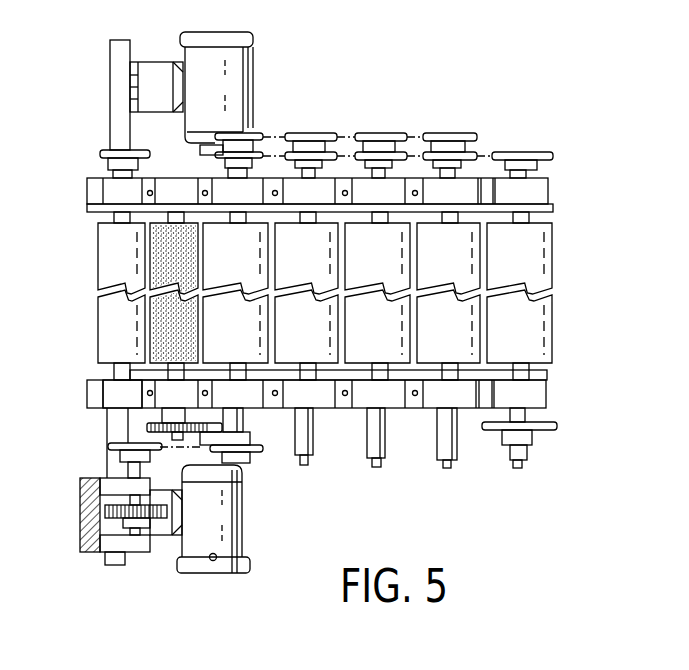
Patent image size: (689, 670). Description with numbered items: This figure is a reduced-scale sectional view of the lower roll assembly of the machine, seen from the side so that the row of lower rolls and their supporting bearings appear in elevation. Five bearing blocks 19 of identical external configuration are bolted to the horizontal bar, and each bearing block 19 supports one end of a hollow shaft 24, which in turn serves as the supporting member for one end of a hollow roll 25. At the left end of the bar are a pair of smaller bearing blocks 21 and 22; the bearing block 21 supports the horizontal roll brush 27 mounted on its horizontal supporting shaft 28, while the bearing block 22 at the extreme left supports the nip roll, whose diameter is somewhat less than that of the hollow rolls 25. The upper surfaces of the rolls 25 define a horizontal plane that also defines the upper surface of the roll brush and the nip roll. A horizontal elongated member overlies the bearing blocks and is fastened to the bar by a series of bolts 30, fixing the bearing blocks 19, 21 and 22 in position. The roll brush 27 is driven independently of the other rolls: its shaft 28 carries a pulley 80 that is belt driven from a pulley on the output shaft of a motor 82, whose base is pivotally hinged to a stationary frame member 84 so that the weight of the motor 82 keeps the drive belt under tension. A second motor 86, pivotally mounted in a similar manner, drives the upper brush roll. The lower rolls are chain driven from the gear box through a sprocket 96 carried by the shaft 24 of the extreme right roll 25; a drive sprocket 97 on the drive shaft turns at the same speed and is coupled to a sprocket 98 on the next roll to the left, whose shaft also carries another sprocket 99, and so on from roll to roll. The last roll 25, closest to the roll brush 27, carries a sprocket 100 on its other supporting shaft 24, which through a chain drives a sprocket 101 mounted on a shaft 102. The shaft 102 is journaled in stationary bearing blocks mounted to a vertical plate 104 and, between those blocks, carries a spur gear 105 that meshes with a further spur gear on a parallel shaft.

The bearing block 19 is at (463, 203).
The bearing block 21 is at (144, 298).
The bearing block 22 is at (117, 392).
The hollow shaft 24 is at (510, 448).
The hollow roll 25 is at (460, 266).
The roll brush 27 is at (198, 258).
The supporting shaft 28 is at (180, 373).
The bolt 30 is at (414, 396).
The pulley 80 is at (175, 437).
The motor 82 is at (222, 553).
The stationary frame member 84 is at (110, 568).
The motor 86 is at (217, 67).
The sprocket 96 is at (550, 431).
The drive sprocket 97 is at (543, 151).
The sprocket 98 is at (476, 151).
The sprocket 99 is at (442, 134).
The sprocket 100 is at (260, 441).
The sprocket 101 is at (143, 443).
The shaft 102 is at (137, 532).
The vertical plate 104 is at (85, 547).
The spur gear 105 is at (158, 520).